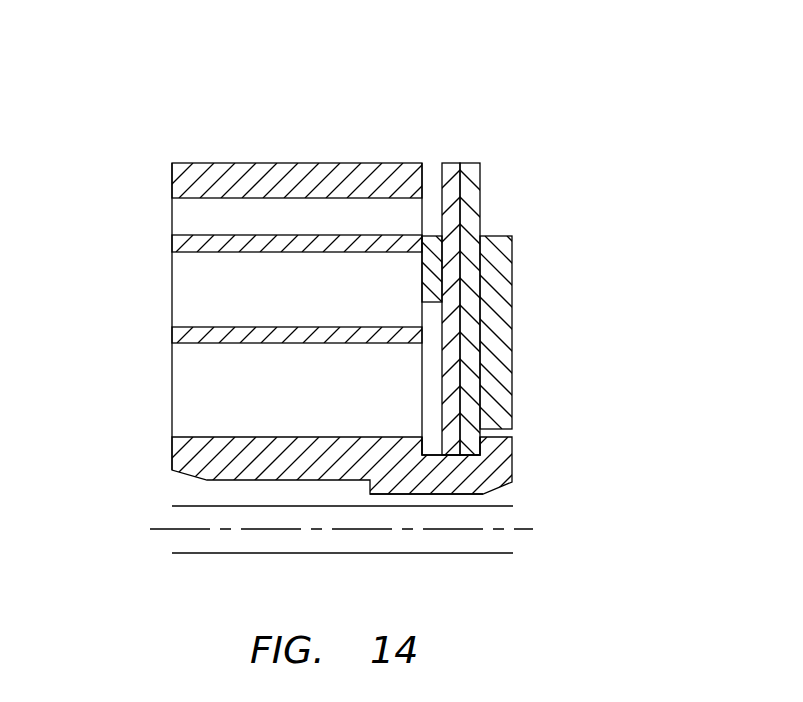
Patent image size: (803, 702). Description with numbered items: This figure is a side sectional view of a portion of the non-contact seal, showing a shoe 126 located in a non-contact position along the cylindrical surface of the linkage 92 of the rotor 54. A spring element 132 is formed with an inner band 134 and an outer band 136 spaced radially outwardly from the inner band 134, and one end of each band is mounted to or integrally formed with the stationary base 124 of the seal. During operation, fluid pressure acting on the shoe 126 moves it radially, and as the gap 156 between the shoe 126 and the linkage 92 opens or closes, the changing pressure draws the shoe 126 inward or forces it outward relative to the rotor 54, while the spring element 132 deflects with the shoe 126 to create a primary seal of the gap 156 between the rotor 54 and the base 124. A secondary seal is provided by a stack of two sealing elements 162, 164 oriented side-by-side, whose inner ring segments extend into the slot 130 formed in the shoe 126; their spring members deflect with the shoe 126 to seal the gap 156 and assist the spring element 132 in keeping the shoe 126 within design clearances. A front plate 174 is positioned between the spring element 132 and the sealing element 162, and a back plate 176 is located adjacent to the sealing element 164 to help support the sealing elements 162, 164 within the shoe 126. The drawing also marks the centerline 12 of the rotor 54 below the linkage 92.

The assembly 132 is at (116, 80).
The first body portion 124 is at (316, 163).
The first spacer 136 is at (178, 243).
The second spacer 134 is at (176, 334).
The second body portion 126 is at (172, 449).
The groove 130 is at (431, 441).
The first plate 162 is at (450, 170).
The second plate 164 is at (480, 196).
The retainer 176 is at (512, 272).
The seal 174 is at (430, 266).
The bottom surface 156 is at (483, 499).
The shaft 54 is at (404, 550).
The shaft 92 is at (485, 554).
The axis 12 is at (160, 530).